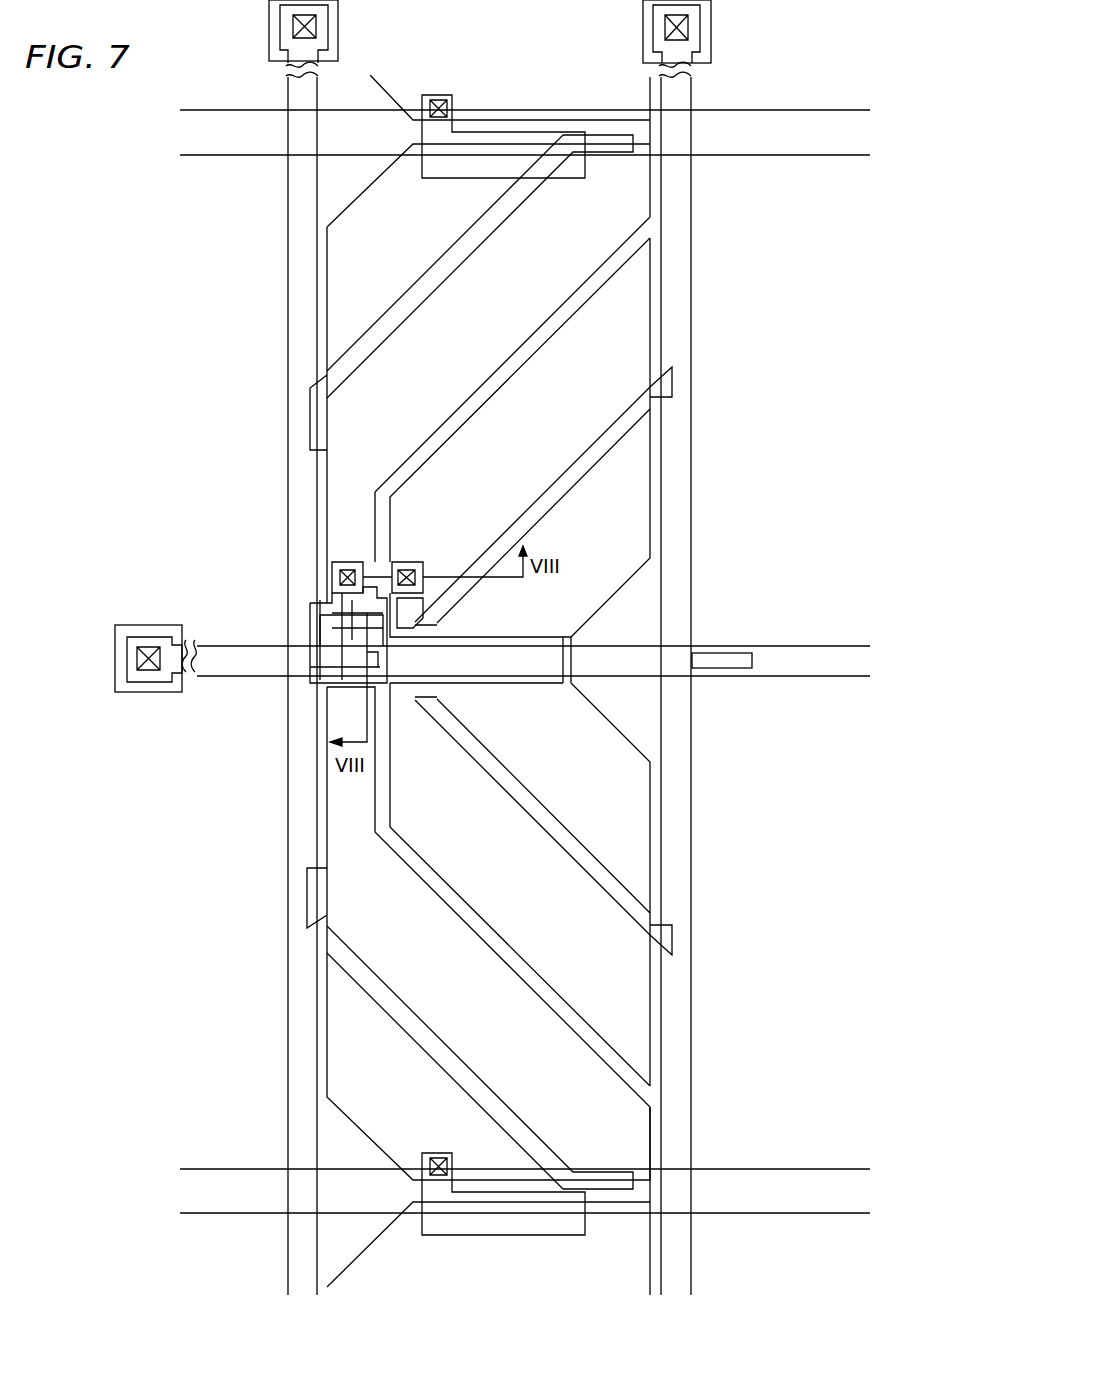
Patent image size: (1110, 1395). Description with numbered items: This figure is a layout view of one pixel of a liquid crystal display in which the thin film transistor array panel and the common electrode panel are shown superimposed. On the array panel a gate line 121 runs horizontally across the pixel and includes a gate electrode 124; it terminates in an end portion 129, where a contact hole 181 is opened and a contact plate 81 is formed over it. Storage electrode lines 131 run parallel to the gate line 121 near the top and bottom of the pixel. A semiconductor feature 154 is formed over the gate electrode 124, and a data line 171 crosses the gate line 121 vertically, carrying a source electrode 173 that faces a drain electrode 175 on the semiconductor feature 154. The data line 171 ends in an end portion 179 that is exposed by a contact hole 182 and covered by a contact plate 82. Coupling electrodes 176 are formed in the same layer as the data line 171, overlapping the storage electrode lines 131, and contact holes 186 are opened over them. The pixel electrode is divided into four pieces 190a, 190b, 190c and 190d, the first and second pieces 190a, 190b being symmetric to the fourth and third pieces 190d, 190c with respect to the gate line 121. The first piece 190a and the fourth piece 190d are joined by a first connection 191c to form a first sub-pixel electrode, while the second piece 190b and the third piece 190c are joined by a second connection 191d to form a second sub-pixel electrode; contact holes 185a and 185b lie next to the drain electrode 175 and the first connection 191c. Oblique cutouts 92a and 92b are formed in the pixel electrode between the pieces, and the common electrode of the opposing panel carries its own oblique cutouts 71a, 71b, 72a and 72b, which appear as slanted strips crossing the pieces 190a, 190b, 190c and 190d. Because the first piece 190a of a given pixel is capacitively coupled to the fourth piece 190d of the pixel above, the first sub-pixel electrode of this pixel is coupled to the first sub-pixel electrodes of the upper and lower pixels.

The cutout 71a is at (547, 510).
The cutout 71b is at (552, 800).
The cutout 72a is at (450, 273).
The cutout 72b is at (452, 1048).
The contact plate 81 is at (160, 692).
The contact plate 82 is at (268, 42).
The cutout 92a is at (520, 367).
The cutout 92b is at (517, 950).
The gate line 121 is at (210, 676).
The gate electrode 124 is at (313, 625).
The end portion 129 is at (137, 683).
The storage electrode line 131 is at (222, 155).
The semiconductor feature 154 is at (310, 660).
The data line 171 is at (288, 228).
The source electrode 173 is at (340, 700).
The drain electrode 175 is at (313, 605).
The coupling electrode 176 is at (520, 132).
The end portion 179 is at (280, 17).
The contact hole 181 is at (150, 647).
The contact hole 182 is at (316, 27).
The contact hole 185a is at (347, 562).
The contact hole 185b is at (407, 562).
The contact hole 186 is at (438, 100).
The first piece of pixel electrode 190a is at (325, 352).
The second piece of pixel electrode 190b is at (652, 442).
The third piece of pixel electrode 190c is at (652, 862).
The fourth piece of pixel electrode 190d is at (325, 949).
The first connection 191c is at (425, 618).
The second connection 191d is at (575, 660).